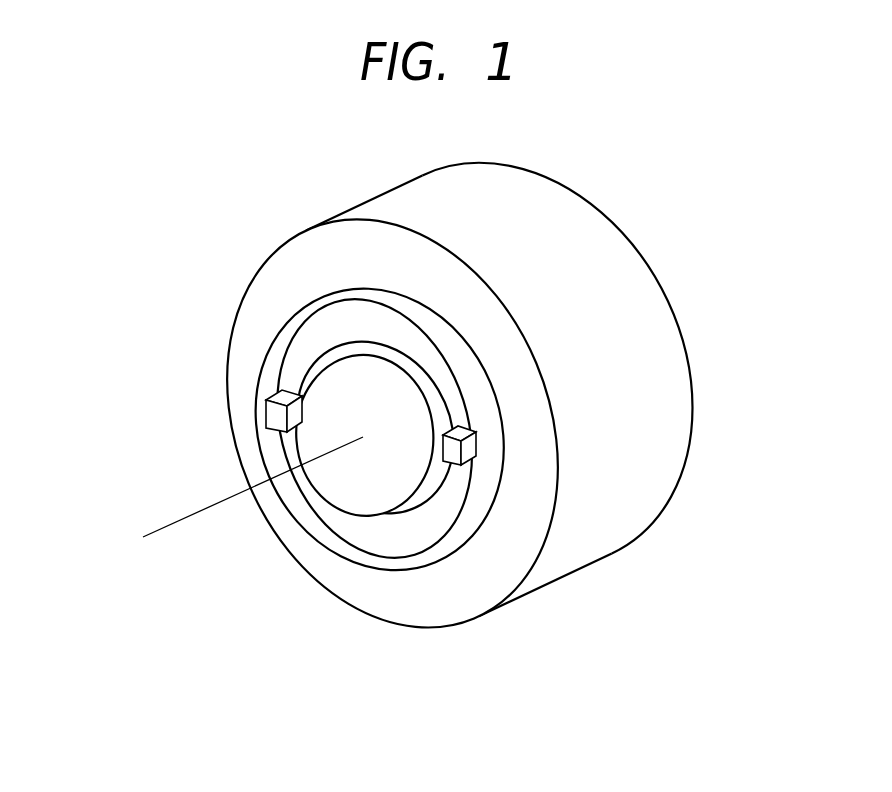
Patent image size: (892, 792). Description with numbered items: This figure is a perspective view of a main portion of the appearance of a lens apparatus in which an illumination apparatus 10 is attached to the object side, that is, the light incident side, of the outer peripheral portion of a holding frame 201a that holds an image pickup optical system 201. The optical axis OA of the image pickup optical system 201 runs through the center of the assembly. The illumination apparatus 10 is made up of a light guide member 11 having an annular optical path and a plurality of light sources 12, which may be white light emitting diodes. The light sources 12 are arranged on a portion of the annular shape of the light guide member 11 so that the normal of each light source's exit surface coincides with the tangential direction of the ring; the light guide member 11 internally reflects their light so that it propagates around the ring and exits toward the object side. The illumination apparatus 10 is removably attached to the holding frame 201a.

The illumination apparatus 10 is at (361, 291).
The light guide member 11 is at (318, 303).
The light sources 12 is at (270, 393).
The image pickup optical system 201 is at (390, 395).
The holding frame 201a is at (665, 367).
The optical axis OA is at (180, 517).